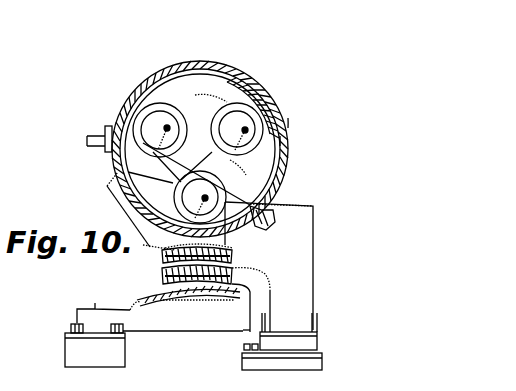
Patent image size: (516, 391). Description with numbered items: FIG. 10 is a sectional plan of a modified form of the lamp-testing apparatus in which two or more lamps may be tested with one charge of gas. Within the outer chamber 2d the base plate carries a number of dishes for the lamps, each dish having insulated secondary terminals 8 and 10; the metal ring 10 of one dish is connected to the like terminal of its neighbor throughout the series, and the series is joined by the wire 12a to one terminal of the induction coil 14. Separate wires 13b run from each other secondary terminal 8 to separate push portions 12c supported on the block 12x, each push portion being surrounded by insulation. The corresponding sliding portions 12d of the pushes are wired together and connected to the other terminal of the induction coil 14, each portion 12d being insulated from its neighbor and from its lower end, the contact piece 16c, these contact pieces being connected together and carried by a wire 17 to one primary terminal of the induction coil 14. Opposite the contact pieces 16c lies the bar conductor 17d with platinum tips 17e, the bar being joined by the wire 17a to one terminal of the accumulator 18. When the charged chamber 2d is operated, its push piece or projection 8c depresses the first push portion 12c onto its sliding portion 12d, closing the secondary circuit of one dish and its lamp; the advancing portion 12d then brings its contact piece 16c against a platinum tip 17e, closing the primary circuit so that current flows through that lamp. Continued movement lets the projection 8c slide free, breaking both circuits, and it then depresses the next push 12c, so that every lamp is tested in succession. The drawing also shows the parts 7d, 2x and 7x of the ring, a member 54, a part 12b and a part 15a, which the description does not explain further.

The outer chamber 2d is at (123, 101).
The pole piece band 7d is at (240, 84).
The outer ring 2x is at (289, 122).
The inner ring band 7x is at (287, 140).
The shaft 54 is at (98, 136).
The insulated secondary terminal 8 is at (167, 128).
The separate wires 13b is at (147, 158).
The metal ring secondary terminal 10 is at (192, 108).
The brush contact 12b is at (212, 99).
The push piece or projection 8c is at (274, 218).
The wire 12a is at (297, 208).
The block 12x is at (163, 258).
The push portions 12c is at (232, 252).
The sliding portions 12d is at (162, 274).
The contact piece 16c is at (142, 297).
The bar conductor 17d is at (156, 301).
The platinum tips 17e is at (190, 302).
The conduit tube 15a is at (268, 293).
The wire 17 is at (249, 312).
The wire 17a is at (97, 305).
The accumulator 18 is at (95, 345).
The induction coil 14 is at (282, 341).